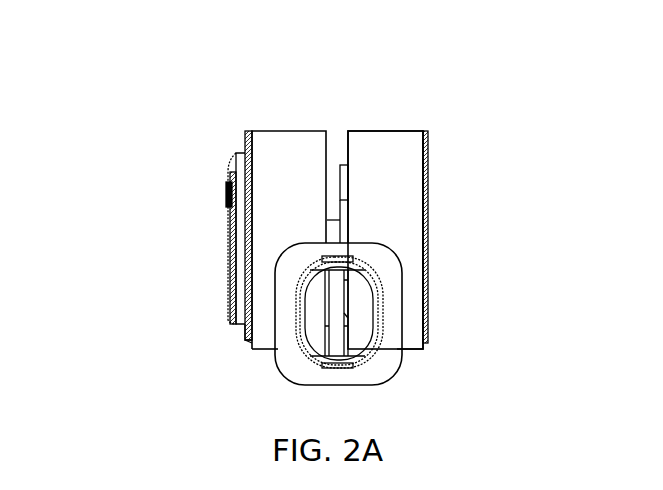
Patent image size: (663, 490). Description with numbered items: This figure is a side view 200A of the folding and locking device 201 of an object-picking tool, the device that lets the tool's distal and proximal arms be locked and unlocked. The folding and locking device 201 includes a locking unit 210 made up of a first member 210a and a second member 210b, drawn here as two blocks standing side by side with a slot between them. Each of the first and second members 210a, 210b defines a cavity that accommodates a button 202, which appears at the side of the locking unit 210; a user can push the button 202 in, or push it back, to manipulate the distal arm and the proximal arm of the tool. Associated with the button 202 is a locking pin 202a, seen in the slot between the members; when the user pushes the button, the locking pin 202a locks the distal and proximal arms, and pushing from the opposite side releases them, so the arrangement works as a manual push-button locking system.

The side view 200A is at (148, 76).
The locking unit 210 is at (268, 122).
The folding and locking device 201 is at (383, 153).
The button 202 is at (237, 265).
The locking pin 202a is at (333, 225).
The first member 210a is at (248, 343).
The second member 210b is at (415, 323).